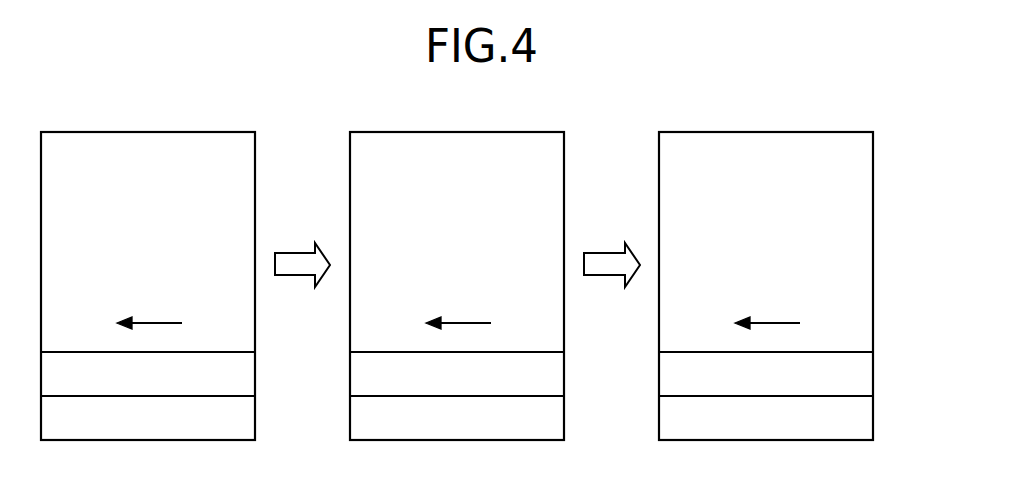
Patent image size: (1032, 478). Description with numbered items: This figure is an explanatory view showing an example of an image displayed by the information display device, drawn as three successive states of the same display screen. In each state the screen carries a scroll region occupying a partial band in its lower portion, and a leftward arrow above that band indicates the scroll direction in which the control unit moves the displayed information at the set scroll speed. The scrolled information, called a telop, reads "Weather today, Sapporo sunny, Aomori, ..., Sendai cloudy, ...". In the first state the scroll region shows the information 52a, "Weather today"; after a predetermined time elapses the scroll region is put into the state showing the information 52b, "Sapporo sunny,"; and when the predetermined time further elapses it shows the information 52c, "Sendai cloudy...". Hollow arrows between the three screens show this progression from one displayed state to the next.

The information 52a is at (230, 388).
The information 52b is at (539, 388).
The information 52c is at (838, 388).